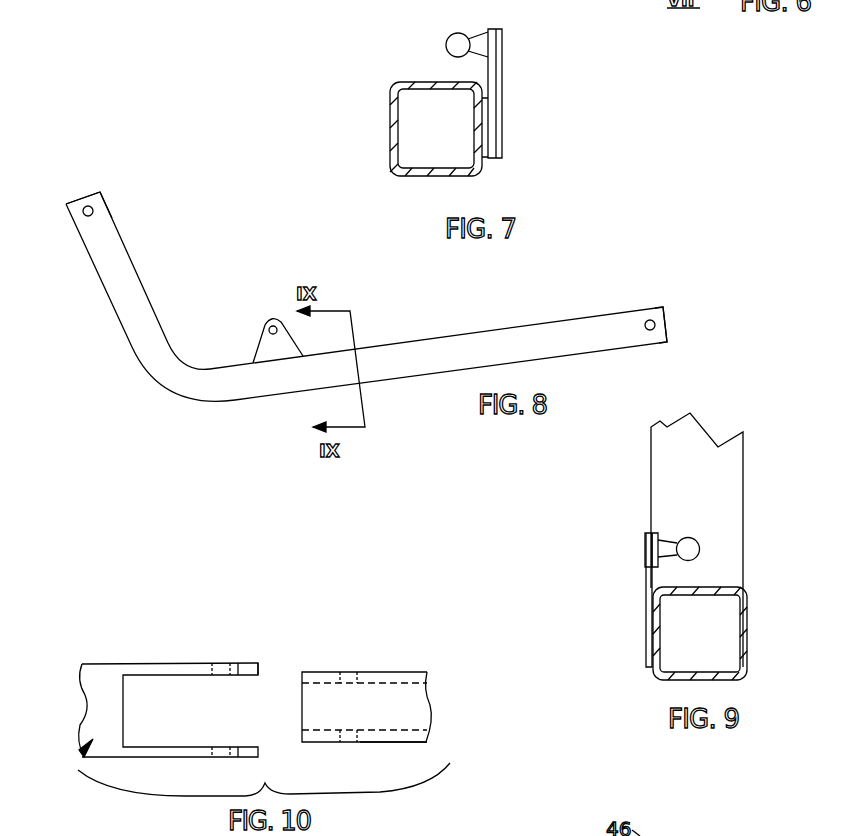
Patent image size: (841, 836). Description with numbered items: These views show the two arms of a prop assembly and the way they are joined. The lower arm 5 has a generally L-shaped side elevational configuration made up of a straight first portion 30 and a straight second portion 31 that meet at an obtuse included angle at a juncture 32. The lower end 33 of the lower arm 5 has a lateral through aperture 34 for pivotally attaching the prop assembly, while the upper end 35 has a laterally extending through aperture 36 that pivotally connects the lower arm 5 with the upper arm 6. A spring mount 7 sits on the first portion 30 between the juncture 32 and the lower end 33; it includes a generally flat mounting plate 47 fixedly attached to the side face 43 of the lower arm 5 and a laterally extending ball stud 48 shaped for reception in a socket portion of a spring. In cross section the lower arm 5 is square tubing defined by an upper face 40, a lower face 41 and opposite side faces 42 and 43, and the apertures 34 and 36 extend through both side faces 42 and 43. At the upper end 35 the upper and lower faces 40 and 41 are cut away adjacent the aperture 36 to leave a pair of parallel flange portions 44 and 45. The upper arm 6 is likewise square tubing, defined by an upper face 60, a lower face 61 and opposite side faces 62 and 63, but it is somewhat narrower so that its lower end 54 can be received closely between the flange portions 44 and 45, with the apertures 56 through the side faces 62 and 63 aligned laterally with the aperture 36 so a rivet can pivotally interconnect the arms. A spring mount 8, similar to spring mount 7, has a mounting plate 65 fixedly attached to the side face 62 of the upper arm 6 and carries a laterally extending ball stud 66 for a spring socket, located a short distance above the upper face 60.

In FIG. 8, the lower arm 5 is at (379, 297).
In FIG. 9, the lower arm 5 is at (698, 641).
In FIG. 10, the lower arm 5 is at (162, 701).
In FIG. 10, the upper arm 6 is at (380, 699).
In FIG. 8, the spring mount 7 is at (262, 334).
In FIG. 9, the spring mount 7 is at (645, 536).
In FIG. 7, the spring mount 8 is at (523, 82).
In FIG. 8, the first portion 30 is at (430, 374).
In FIG. 8, the second portion 31 is at (106, 295).
In FIG. 8, the juncture 32 is at (165, 369).
In FIG. 8, the lower end 33 is at (648, 307).
In FIG. 8, the through aperture 34 is at (655, 333).
In FIG. 8, the upper end 35 is at (100, 192).
In FIG. 10, the upper end 35 is at (258, 663).
In FIG. 8, the through aperture 36 is at (90, 216).
In FIG. 10, the through aperture 36 is at (215, 662).
In FIG. 9, the upper face 40 is at (714, 586).
In FIG. 10, the upper face 40 is at (84, 750).
In FIG. 9, the lower face 41 is at (672, 680).
In FIG. 9, the side face 42 is at (747, 632).
In FIG. 9, the side face 43 is at (655, 632).
In FIG. 10, the flange portion 44 is at (135, 674).
In FIG. 10, the flange portion 45 is at (157, 752).
In FIG. 8, the mounting plate 47 is at (251, 320).
In FIG. 9, the mounting plate 47 is at (646, 583).
In FIG. 9, the ball stud 48 is at (690, 538).
In FIG. 10, the lower end 54 is at (323, 743).
In FIG. 10, the aperture 56 is at (345, 670).
In FIG. 7, the upper face 60 is at (396, 84).
In FIG. 7, the lower face 61 is at (433, 178).
In FIG. 7, the side face 62 is at (484, 166).
In FIG. 10, the side face 62 is at (372, 743).
In FIG. 7, the side face 63 is at (410, 124).
In FIG. 10, the side face 63 is at (387, 672).
In FIG. 7, the mounting plate 65 is at (502, 100).
In FIG. 7, the ball stud 66 is at (449, 37).